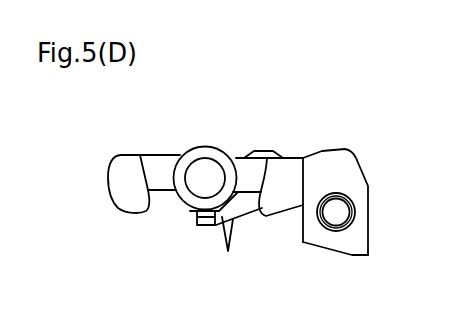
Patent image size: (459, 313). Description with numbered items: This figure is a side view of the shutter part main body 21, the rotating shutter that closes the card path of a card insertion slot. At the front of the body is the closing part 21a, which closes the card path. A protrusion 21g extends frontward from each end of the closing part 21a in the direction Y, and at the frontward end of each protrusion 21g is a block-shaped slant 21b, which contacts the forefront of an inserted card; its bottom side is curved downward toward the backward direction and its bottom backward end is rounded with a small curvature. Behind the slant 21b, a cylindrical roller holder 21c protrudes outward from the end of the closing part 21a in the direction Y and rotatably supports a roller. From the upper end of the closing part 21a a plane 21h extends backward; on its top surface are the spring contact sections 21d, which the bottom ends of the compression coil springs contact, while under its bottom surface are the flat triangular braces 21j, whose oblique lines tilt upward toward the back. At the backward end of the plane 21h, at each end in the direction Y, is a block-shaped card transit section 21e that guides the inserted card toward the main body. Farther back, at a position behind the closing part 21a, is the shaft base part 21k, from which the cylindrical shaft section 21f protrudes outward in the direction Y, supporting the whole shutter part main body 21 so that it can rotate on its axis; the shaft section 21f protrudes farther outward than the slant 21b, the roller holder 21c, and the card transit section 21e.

The shutter part main body 21 is at (336, 150).
The closing part 21a is at (197, 224).
The slant 21b is at (112, 198).
The roller holder 21c is at (208, 147).
The spring contact section 21d is at (263, 150).
The card transit section 21e is at (270, 218).
The shaft section 21f is at (356, 213).
The protrusion 21g is at (165, 154).
The plane 21h is at (238, 156).
The brace 21j is at (228, 251).
The shaft base part 21k is at (368, 243).